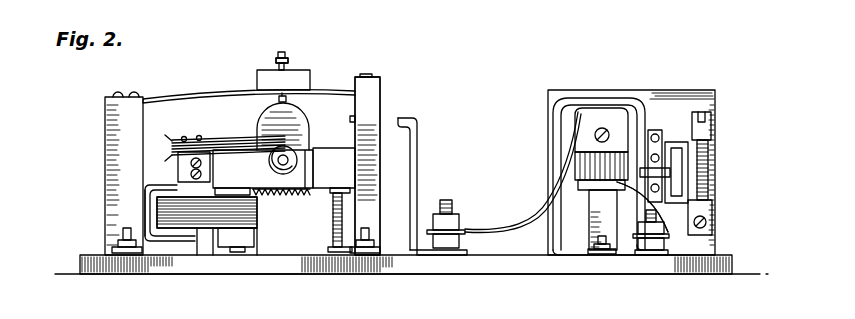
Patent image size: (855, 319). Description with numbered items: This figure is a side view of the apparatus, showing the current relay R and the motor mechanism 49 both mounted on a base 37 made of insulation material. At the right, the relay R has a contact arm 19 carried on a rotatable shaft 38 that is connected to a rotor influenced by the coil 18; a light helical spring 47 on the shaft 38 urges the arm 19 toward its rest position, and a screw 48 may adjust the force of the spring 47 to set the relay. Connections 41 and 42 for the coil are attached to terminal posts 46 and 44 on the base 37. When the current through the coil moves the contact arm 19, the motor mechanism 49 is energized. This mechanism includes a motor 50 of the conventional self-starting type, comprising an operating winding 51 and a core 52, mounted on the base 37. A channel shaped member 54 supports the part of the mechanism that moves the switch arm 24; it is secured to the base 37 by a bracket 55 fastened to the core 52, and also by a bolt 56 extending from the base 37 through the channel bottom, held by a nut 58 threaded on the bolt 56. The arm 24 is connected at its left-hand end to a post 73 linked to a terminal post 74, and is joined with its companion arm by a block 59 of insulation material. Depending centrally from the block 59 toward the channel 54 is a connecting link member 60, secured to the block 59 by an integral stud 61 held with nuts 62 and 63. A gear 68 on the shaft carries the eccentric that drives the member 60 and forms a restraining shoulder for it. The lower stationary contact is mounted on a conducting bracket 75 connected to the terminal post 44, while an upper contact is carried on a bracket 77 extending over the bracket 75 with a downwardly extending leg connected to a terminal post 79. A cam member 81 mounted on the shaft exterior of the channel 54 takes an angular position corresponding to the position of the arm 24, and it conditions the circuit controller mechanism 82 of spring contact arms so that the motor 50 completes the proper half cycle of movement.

The coil 18 is at (580, 160).
The contact arm 19 is at (657, 140).
The arm 24 is at (350, 95).
The base 37 is at (505, 263).
The rotatable shaft 38 is at (650, 170).
The connection 41 is at (665, 218).
The connection 42 is at (485, 228).
The terminal post 44 is at (445, 200).
The terminal post 46 is at (652, 252).
The helical spring 47 is at (690, 203).
The screw 48 is at (704, 152).
The motor mechanism 49 is at (176, 247).
The motor 50 is at (140, 191).
The operating winding 51 is at (150, 212).
The core 52 is at (252, 214).
The channel shaped member 54 is at (327, 155).
The bracket 55 is at (233, 192).
The bolt 56 is at (333, 236).
The nut 58 is at (284, 197).
The block 59 is at (300, 75).
The connecting link member 60 is at (292, 115).
The stud 61 is at (286, 58).
The nut 62 is at (273, 63).
The nut 63 is at (277, 100).
The gear 68 is at (283, 211).
The post 73 is at (108, 131).
The terminal post 74 is at (118, 232).
The conducting bracket 75 is at (400, 118).
The bracket 77 is at (372, 88).
The terminal post 79 is at (368, 232).
The cam member 81 is at (295, 170).
The circuit controller mechanism 82 is at (218, 140).
The current relay R is at (712, 83).